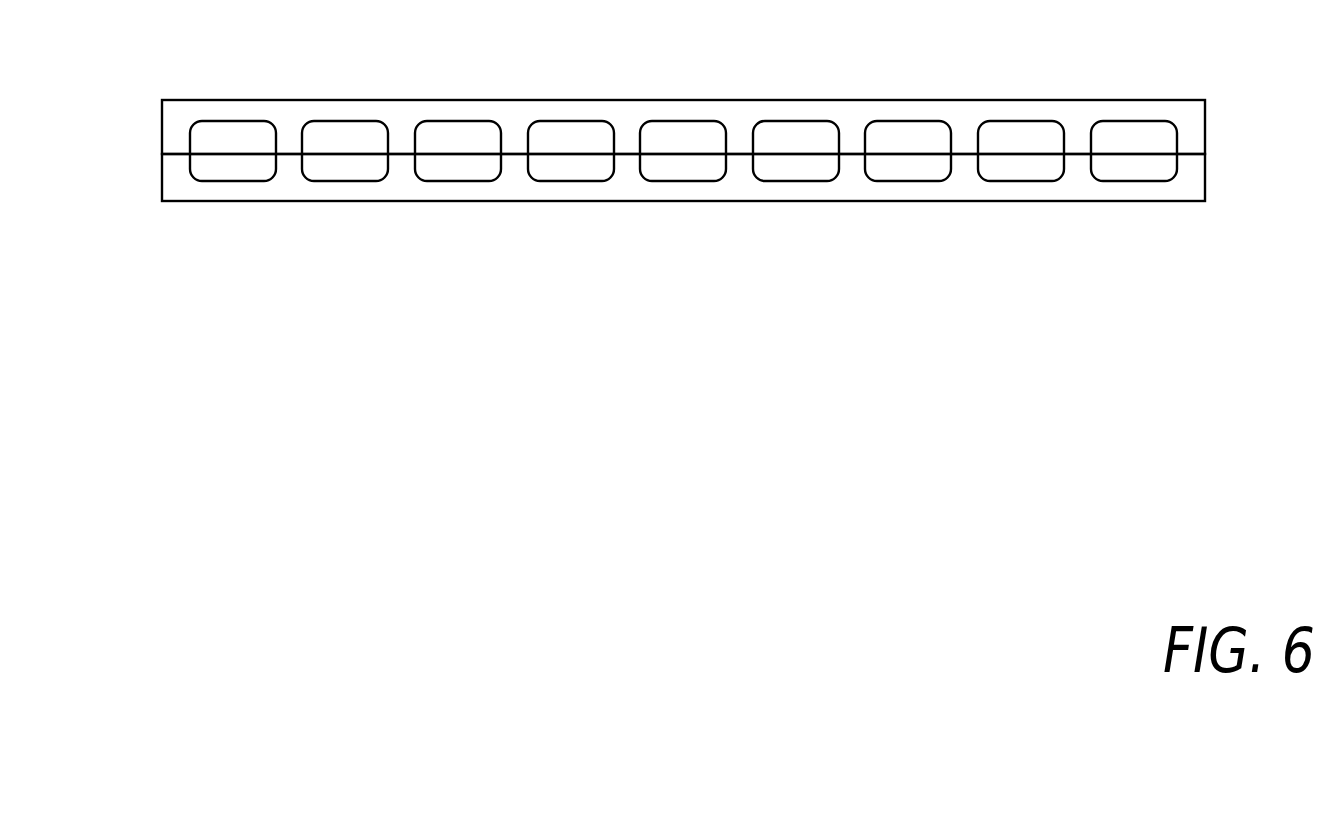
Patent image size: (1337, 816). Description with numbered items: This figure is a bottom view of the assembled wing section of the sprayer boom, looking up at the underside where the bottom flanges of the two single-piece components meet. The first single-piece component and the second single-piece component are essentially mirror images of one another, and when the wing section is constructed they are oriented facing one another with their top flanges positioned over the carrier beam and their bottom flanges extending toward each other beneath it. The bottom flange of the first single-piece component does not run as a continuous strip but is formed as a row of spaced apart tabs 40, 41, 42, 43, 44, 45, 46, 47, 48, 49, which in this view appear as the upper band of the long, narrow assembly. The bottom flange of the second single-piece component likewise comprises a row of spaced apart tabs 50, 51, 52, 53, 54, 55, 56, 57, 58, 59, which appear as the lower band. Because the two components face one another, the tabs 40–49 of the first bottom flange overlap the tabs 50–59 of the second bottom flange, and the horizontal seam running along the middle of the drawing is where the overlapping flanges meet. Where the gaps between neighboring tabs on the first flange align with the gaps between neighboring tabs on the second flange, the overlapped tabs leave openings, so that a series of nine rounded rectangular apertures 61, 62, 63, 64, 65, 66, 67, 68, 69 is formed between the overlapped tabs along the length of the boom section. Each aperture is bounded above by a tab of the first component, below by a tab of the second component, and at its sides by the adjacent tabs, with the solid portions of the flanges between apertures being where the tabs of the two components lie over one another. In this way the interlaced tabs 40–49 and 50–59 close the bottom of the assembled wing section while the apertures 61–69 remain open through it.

The tab 40 is at (177, 138).
The tab 50 is at (175, 182).
The tab 41 is at (287, 138).
The tab 42 is at (395, 138).
The tab 43 is at (515, 137).
The tab 44 is at (624, 140).
The tab 45 is at (737, 140).
The tab 46 is at (847, 138).
The tab 47 is at (967, 140).
The tab 48 is at (1077, 137).
The tab 49 is at (1192, 135).
The tab 51 is at (287, 170).
The tab 52 is at (402, 167).
The tab 53 is at (510, 168).
The tab 54 is at (627, 167).
The tab 55 is at (740, 165).
The tab 56 is at (852, 163).
The tab 57 is at (962, 160).
The tab 58 is at (1077, 163).
The tab 59 is at (1192, 175).
The aperture 61 is at (230, 137).
The aperture 62 is at (340, 165).
The aperture 63 is at (450, 145).
The aperture 64 is at (563, 163).
The aperture 65 is at (678, 147).
The aperture 66 is at (785, 160).
The aperture 67 is at (903, 137).
The aperture 68 is at (1007, 160).
The aperture 69 is at (1130, 137).